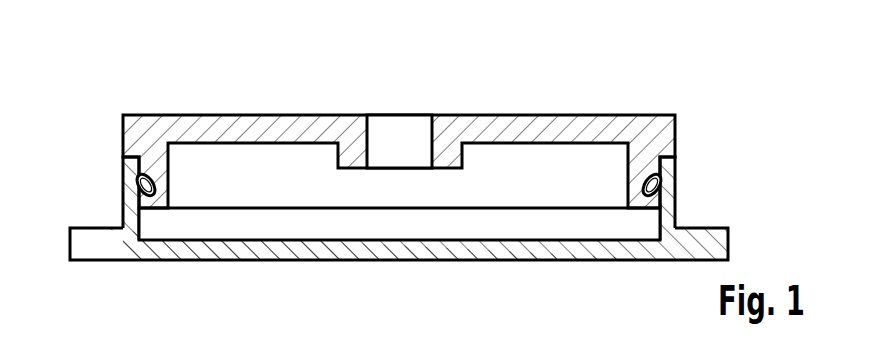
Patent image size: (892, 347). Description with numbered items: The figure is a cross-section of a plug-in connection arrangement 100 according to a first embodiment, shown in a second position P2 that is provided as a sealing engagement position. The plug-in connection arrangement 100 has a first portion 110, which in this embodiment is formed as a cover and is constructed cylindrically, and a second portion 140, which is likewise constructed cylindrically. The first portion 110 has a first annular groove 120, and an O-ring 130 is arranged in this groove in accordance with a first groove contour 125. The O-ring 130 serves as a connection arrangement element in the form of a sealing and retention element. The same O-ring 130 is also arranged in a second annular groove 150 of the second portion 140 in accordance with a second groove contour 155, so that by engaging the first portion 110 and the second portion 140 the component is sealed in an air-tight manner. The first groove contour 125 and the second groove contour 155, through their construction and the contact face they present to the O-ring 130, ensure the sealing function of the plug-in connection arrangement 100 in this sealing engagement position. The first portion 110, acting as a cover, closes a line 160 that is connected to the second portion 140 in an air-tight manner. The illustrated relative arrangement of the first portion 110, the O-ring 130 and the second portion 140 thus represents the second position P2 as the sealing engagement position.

The plug-in connection arrangement 100 is at (444, 172).
The first portion 110 is at (438, 243).
The first annular groove 120 is at (465, 198).
The first groove contour 125 is at (677, 182).
The O-ring 130 is at (133, 185).
The second portion 140 is at (399, 120).
The second annular groove 150 is at (113, 239).
The second groove contour 155 is at (145, 185).
The line 160 is at (390, 127).
The second position P2 is at (135, 99).